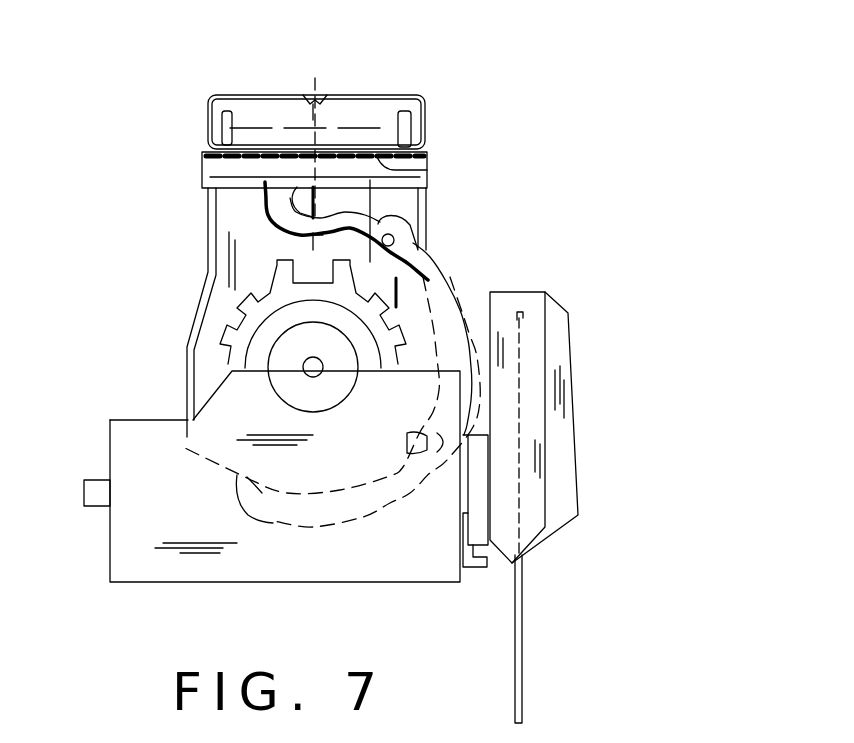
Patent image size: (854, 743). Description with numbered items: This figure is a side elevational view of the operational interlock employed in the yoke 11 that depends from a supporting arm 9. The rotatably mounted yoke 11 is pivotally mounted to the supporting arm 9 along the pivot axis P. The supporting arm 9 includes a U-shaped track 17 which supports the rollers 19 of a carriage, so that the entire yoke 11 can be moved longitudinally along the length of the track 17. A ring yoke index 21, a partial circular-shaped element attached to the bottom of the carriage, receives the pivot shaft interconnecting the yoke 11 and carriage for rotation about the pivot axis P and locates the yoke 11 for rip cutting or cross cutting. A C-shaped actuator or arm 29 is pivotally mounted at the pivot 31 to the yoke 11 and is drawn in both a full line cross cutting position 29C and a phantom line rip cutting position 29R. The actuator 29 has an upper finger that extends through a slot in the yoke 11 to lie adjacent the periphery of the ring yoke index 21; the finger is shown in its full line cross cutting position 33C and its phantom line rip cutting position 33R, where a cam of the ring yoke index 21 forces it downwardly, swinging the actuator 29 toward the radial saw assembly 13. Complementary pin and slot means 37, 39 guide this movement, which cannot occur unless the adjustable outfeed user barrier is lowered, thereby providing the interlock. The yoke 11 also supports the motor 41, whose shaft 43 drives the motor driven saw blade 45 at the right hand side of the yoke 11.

The supporting arm 9 is at (238, 92).
The pivot axis P is at (313, 120).
The yoke 11 is at (183, 270).
The radial saw assembly 13 is at (612, 390).
The U-shaped track 17 is at (428, 122).
The rollers 19 is at (227, 128).
The ring yoke index 21 is at (432, 168).
The C-shaped actuator 29 is at (452, 261).
The cross cutting position of actuator 29C is at (435, 295).
The rip cutting position of actuator 29R is at (465, 300).
The pivot 31 is at (398, 232).
The rip cutting position of finger 33R is at (265, 180).
The cross cutting position of finger 33C is at (265, 182).
The pin 37 is at (417, 447).
The slot 39 is at (440, 450).
The motor 41 is at (157, 567).
The shaft 43 is at (97, 497).
The motor driven saw blade 45 is at (517, 612).